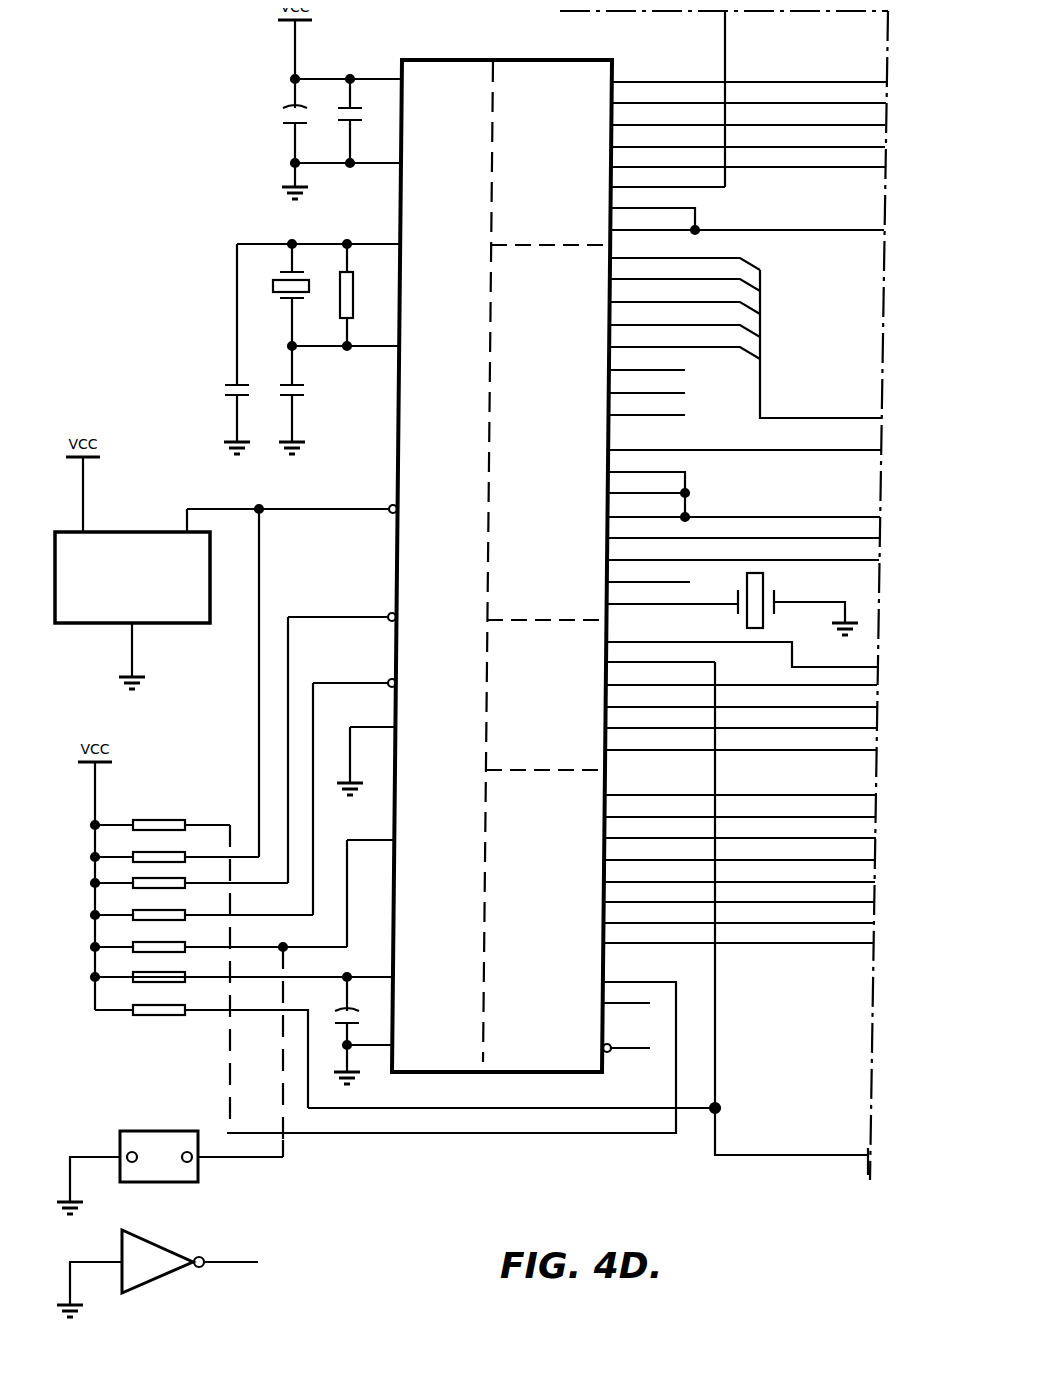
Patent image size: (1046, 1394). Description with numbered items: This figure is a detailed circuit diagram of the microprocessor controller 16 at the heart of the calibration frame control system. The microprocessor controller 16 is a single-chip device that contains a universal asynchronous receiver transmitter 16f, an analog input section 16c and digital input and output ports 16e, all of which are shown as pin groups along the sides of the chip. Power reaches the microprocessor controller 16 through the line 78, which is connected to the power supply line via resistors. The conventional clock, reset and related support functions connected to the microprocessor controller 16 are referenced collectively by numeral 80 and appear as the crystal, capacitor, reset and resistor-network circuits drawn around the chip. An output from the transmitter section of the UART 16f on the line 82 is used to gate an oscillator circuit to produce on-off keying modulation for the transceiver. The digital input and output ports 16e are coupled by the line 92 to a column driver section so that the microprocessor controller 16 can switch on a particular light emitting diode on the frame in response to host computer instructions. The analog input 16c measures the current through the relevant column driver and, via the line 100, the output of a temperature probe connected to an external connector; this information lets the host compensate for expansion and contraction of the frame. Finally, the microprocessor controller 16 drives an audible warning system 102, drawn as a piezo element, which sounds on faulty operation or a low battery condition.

The microprocessor controller 16 is at (470, 1080).
The analog input 16c is at (540, 182).
The digital input and output ports 16e is at (537, 422).
The universal asynchronous receiver transmitter 16f is at (532, 727).
The line 78 is at (725, 38).
The clock and reset functions 80 is at (315, 143).
The line 82 is at (715, 1047).
The line 92 is at (800, 418).
The line 100 is at (800, 232).
The audible warning system 102 is at (758, 572).